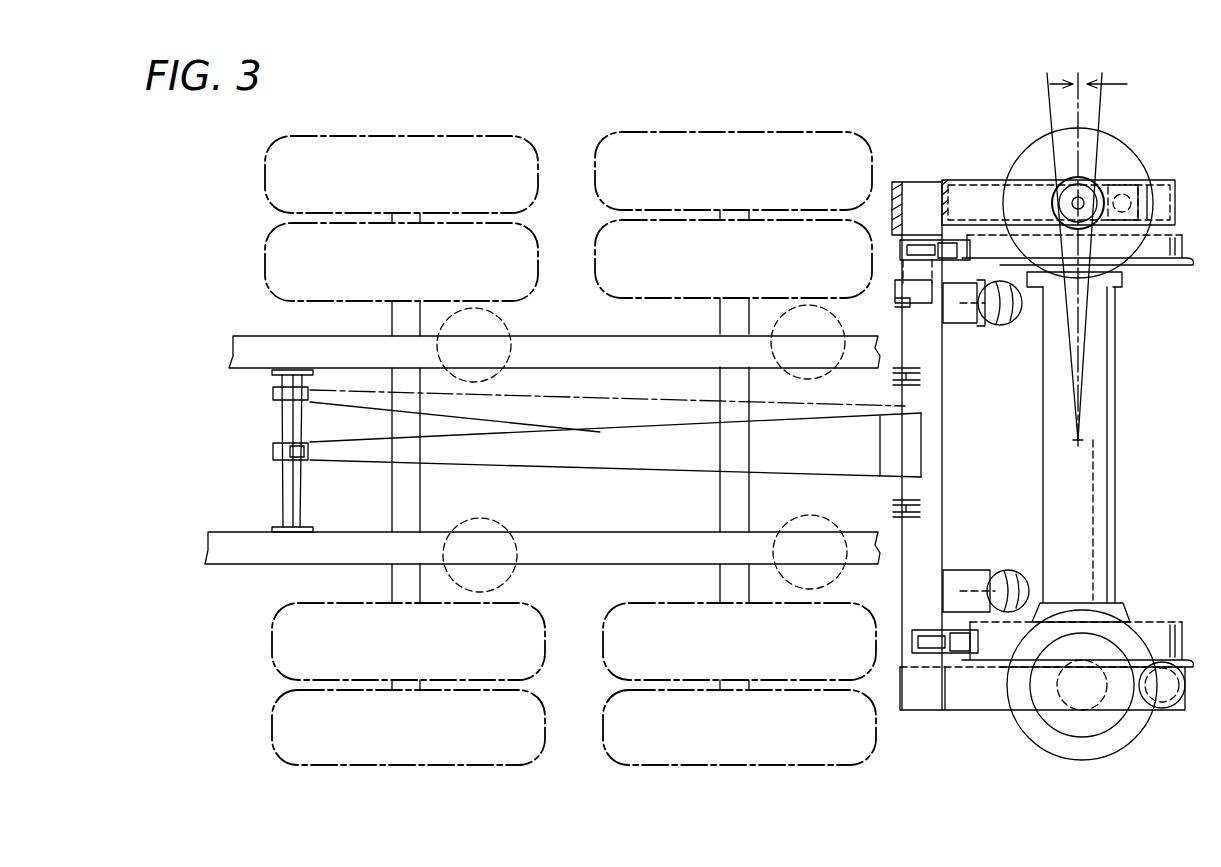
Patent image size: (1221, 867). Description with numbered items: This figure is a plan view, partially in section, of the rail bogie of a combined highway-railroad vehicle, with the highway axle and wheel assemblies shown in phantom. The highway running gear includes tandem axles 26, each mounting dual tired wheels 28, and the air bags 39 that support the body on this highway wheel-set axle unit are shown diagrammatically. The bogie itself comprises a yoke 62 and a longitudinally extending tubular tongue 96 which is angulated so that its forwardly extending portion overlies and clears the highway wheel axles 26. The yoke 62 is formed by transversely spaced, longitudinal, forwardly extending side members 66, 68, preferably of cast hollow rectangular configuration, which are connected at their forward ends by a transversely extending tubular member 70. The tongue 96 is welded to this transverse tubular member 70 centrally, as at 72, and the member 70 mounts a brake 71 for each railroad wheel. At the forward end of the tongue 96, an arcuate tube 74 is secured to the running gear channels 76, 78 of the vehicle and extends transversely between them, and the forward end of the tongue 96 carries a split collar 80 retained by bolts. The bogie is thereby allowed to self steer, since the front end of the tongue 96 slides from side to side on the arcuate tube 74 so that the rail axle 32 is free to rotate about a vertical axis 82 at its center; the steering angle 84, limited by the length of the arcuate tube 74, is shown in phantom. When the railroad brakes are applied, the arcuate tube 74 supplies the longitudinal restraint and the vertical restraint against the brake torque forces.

The tandem axle 26 is at (397, 305).
The dual tired wheel 28 is at (452, 143).
The single axle 32 is at (1113, 338).
The air bag 39 is at (492, 320).
The yoke 62 is at (1162, 402).
The side member 66 is at (977, 180).
The side member 68 is at (977, 707).
The transversely extending tubular member 70 is at (942, 478).
The brake 71 is at (975, 325).
The weld 72 is at (925, 418).
The arcuate tube 74 is at (298, 497).
The running gear channel 76 is at (298, 353).
The running gear channel 78 is at (257, 563).
The split collar 80 is at (280, 447).
The vertical axis 82 is at (1084, 438).
The steering angle 84 is at (1090, 87).
The tongue 96 is at (642, 432).